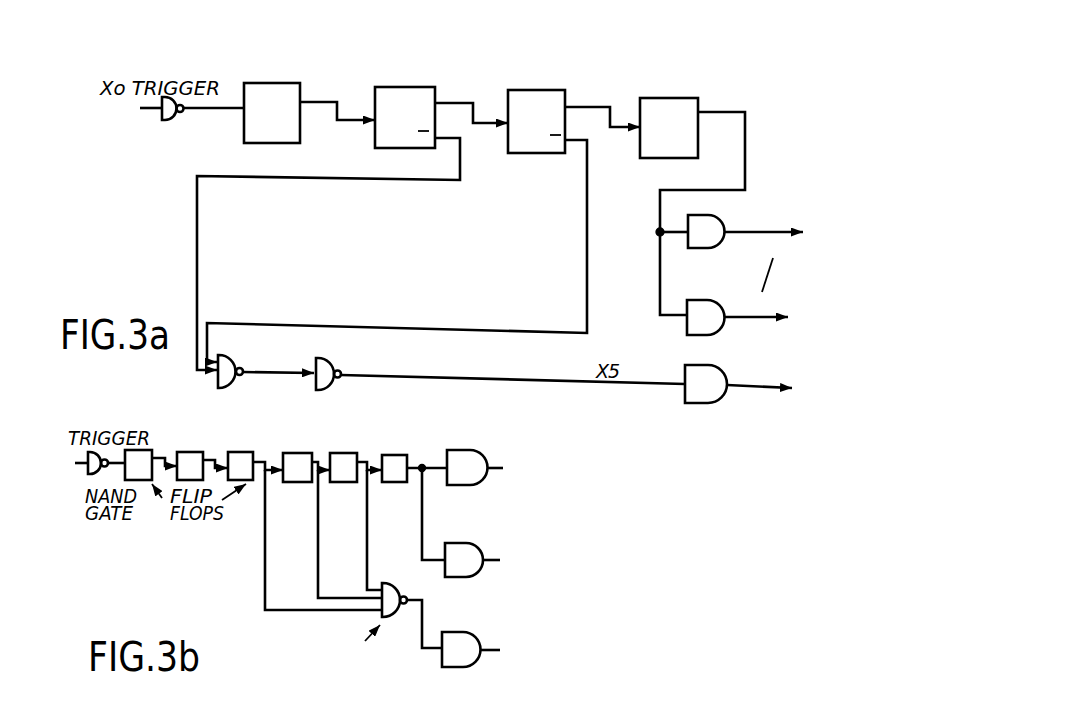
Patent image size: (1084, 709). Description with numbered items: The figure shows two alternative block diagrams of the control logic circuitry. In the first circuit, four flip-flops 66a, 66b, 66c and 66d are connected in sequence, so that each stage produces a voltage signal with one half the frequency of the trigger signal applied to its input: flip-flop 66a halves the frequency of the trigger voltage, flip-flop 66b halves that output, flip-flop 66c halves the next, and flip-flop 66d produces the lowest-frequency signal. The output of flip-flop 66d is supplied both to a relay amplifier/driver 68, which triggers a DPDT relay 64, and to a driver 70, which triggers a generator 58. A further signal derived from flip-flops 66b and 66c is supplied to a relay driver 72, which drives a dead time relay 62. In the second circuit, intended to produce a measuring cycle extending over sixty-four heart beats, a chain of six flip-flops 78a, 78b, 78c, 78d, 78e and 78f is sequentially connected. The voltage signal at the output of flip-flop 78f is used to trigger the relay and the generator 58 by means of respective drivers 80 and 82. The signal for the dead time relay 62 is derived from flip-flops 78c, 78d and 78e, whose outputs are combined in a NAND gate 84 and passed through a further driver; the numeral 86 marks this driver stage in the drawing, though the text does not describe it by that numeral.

In FIG. 3A, the flip-flop 66a is at (258, 60).
In FIG. 3A, the flip-flop 66b is at (428, 87).
In FIG. 3A, the flip-flop 66c is at (563, 90).
In FIG. 3A, the flip-flop 66d is at (696, 98).
In FIG. 3A, the relay amplifier/driver 68 is at (727, 207).
In FIG. 3A, the driver 70 is at (729, 296).
In FIG. 3A, the relay driver 72 is at (722, 374).
In FIG. 3A, the DPDT relay 64 is at (849, 246).
In FIG. 3B, the DPDT relay 64 is at (545, 471).
In FIG. 3A, the generator 58 is at (847, 332).
In FIG. 3B, the generator 58 is at (560, 573).
In FIG. 3A, the dead time relay 62 is at (827, 414).
In FIG. 3B, the dead time relay 62 is at (558, 653).
In FIG. 3B, the flip-flop 78a is at (150, 450).
In FIG. 3B, the flip-flop 78b is at (200, 452).
In FIG. 3B, the flip-flop 78c is at (250, 452).
In FIG. 3B, the flip-flop 78d is at (305, 453).
In FIG. 3B, the flip-flop 78e is at (350, 453).
In FIG. 3B, the flip-flop 78f is at (402, 455).
In FIG. 3B, the driver 80 is at (486, 442).
In FIG. 3B, the driver 82 is at (485, 537).
In FIG. 3B, the NAND gate 84 is at (397, 573).
In FIG. 3B, the driver 86 is at (483, 625).